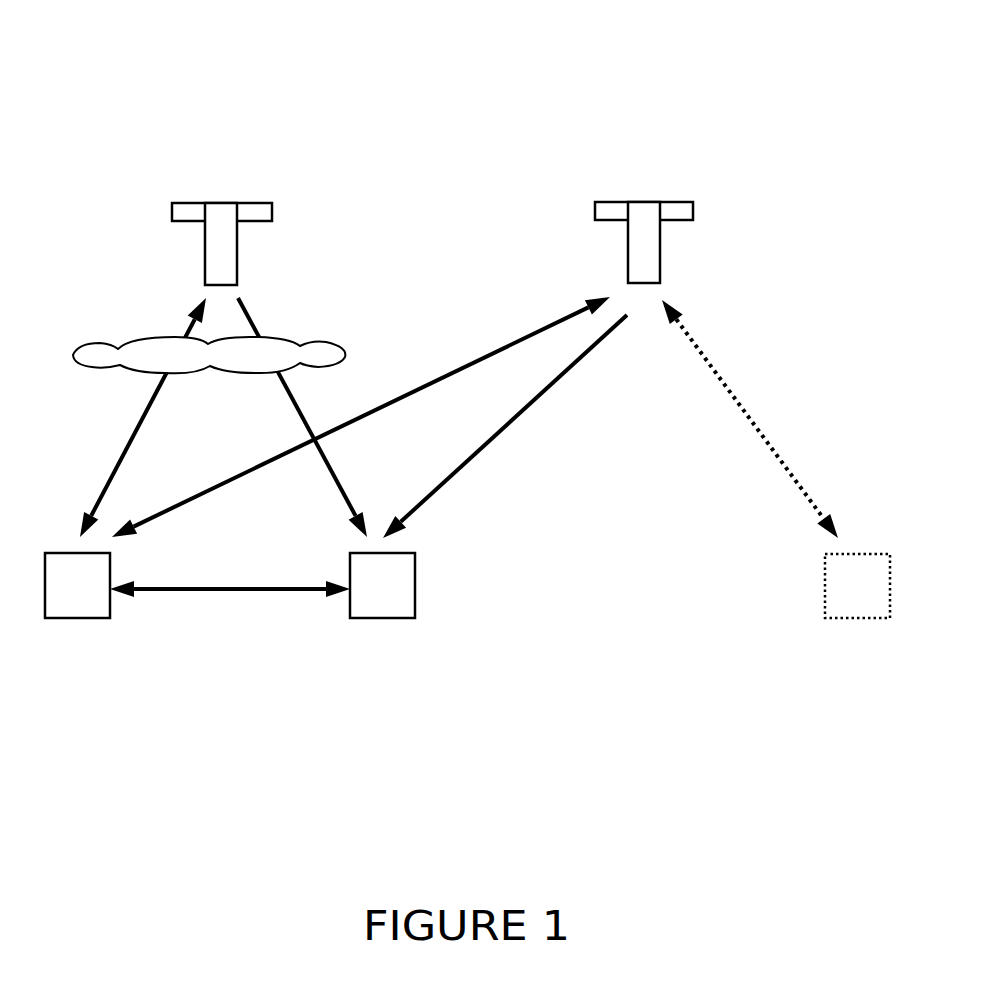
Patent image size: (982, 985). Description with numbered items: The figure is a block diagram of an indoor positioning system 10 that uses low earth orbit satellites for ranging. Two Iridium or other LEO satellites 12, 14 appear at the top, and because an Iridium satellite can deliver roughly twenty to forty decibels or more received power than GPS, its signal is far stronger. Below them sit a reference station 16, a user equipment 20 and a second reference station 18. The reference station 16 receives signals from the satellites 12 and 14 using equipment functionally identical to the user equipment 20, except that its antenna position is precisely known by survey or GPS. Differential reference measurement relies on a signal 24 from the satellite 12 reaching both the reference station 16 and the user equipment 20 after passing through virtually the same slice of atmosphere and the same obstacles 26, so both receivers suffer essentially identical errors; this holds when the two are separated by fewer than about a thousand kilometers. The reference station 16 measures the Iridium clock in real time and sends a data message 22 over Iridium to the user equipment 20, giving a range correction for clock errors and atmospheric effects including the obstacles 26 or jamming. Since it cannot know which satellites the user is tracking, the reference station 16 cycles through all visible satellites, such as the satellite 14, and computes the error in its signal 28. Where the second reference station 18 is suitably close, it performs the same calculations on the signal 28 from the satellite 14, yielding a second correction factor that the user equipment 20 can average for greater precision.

The communication system 10 is at (430, 38).
The LEO satellite 12 is at (178, 204).
The LEO satellite 14 is at (598, 203).
The reference station 16 is at (60, 553).
The second reference station 18 is at (825, 558).
The user equipment 20 is at (352, 560).
The data message 22 is at (260, 588).
The signal 24 is at (133, 428).
The obstacles 26 is at (141, 348).
The signal 28 is at (462, 368).